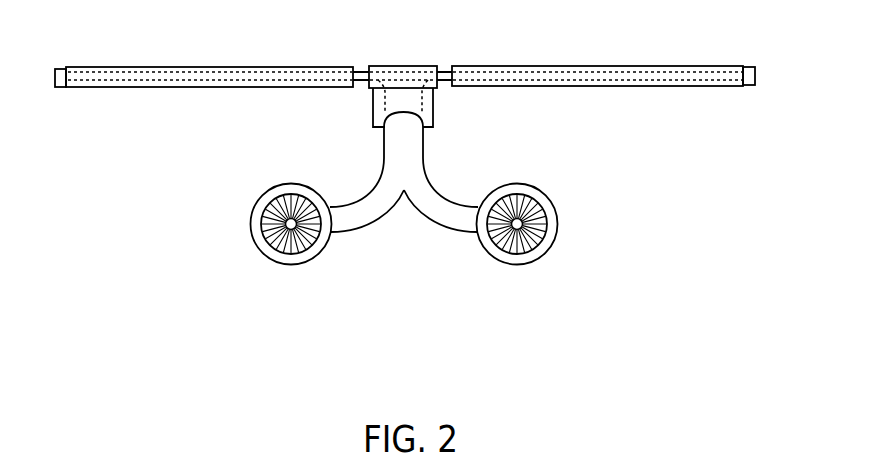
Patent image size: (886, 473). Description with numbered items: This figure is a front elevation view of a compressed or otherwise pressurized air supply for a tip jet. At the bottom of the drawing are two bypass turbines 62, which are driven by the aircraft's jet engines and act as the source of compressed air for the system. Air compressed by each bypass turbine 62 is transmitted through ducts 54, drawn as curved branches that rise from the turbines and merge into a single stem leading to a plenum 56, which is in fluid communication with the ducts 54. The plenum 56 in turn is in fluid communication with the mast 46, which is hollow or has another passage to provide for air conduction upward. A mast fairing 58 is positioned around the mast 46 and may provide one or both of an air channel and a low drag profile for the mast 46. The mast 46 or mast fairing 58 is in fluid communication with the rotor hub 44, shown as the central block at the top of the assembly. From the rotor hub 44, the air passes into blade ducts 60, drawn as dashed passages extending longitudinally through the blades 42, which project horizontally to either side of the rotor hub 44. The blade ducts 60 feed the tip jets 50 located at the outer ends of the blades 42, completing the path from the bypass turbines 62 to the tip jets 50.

The blade 42 is at (205, 66).
The rotor hub 44 is at (401, 66).
The mast 46 is at (434, 106).
The tip jet 50 is at (54, 78).
The duct 54 is at (363, 197).
The plenum 56 is at (415, 143).
The mast fairing 58 is at (372, 108).
The blade duct 60 is at (145, 88).
The bypass turbine 62 is at (262, 217).